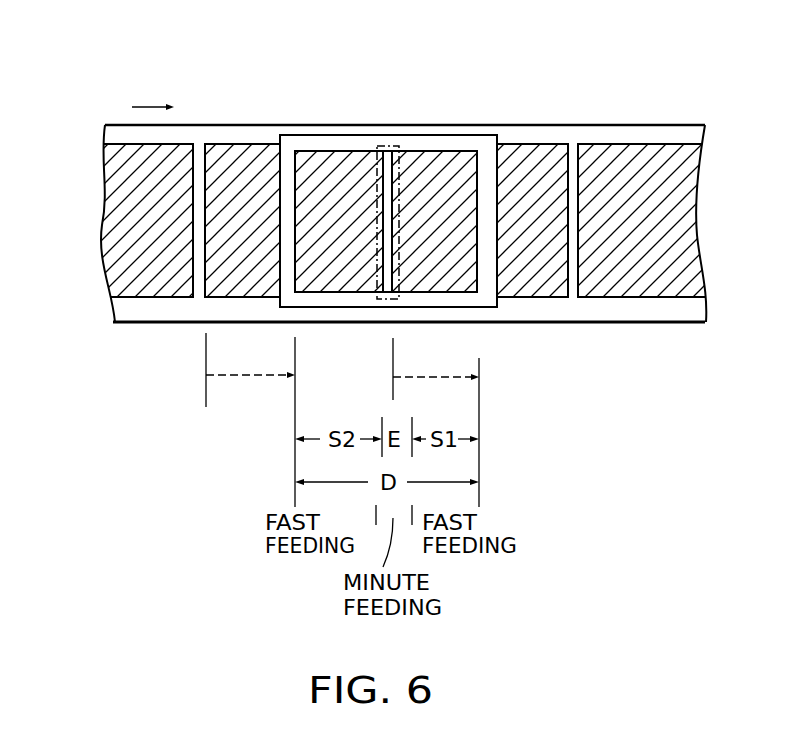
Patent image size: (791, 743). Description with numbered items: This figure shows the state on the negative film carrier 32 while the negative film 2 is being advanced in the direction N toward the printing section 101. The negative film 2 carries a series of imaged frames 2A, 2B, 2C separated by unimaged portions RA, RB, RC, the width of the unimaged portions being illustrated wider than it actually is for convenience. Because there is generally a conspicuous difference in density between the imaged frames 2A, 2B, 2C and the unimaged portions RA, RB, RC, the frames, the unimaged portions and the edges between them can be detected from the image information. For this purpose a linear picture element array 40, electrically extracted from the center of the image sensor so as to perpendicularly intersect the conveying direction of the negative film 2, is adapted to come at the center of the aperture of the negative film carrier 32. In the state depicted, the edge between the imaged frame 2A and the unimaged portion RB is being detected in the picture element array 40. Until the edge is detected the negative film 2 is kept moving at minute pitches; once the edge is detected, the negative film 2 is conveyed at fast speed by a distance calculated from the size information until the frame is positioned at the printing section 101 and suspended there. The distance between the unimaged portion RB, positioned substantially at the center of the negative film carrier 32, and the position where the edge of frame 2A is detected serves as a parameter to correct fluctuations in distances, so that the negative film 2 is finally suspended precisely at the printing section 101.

The printing section 101 is at (320, 72).
The negative film 2 is at (157, 323).
The imaged frame 2A is at (248, 152).
The imaged frame 2B is at (450, 163).
The imaged frame 2C is at (652, 163).
The unimaged portion RA is at (198, 150).
The unimaged portion RB is at (387, 157).
The unimaged portion RC is at (573, 158).
The negative film carrier 32 is at (487, 310).
The picture element array 40 is at (376, 166).
The direction N is at (162, 107).